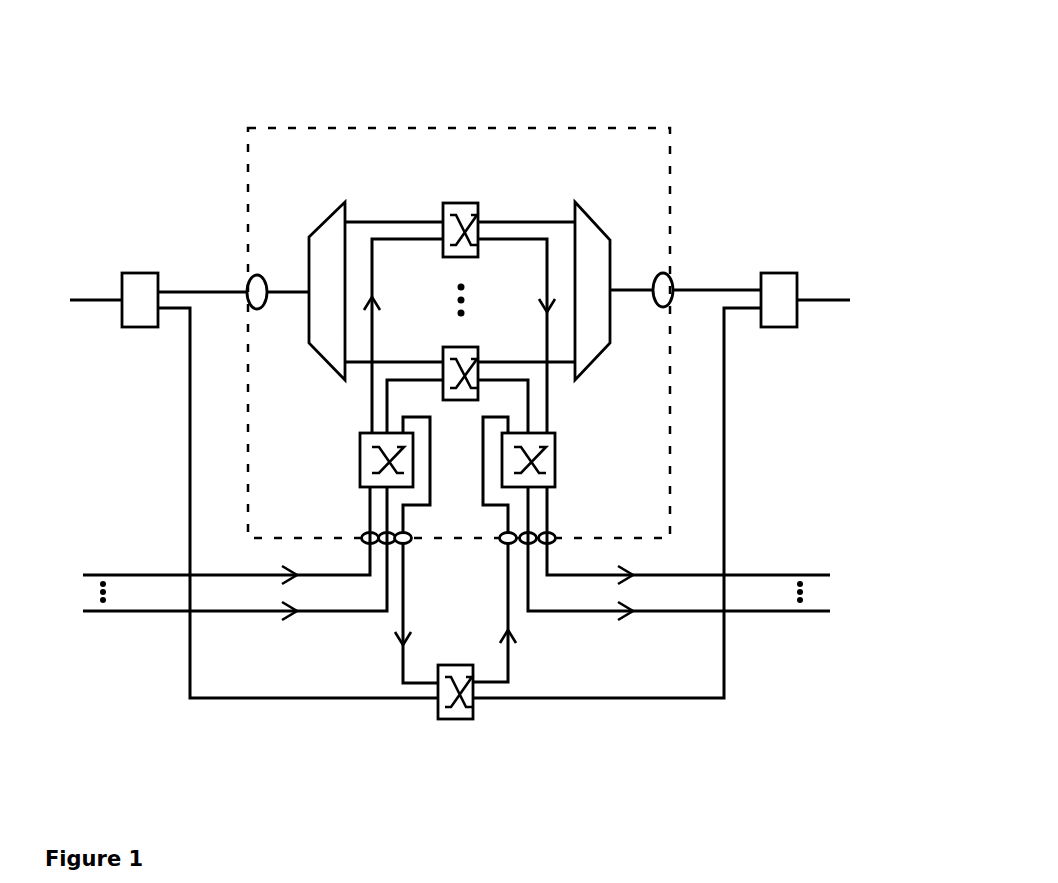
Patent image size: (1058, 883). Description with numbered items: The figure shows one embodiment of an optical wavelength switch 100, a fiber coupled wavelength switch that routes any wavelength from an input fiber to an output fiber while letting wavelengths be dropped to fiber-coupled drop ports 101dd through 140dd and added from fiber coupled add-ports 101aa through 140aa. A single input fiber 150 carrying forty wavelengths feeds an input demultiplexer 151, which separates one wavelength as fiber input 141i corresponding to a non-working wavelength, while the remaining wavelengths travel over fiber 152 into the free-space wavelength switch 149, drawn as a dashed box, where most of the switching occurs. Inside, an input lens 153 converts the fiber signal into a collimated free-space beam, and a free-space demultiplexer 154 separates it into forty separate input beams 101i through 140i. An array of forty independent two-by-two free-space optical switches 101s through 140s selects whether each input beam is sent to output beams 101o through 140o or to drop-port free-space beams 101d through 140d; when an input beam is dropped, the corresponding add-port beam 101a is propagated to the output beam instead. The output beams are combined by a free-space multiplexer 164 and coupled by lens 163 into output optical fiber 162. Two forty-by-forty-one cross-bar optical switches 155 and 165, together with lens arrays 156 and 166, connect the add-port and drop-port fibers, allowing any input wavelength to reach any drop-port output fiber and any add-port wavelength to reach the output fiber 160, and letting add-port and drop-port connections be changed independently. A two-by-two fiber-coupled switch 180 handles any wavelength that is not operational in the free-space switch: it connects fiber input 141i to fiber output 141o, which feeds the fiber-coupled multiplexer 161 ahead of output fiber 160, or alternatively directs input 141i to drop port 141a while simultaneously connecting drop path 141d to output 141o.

The switch 100 is at (627, 92).
The free-space wavelength switch 149 is at (250, 127).
The input fiber 150 is at (85, 293).
The input demultiplexer 151 is at (124, 330).
The fiber 152 is at (200, 286).
The input lens 153 is at (262, 312).
The free-space demultiplexer 154 is at (328, 212).
The cross-bar optical switch 155 is at (357, 462).
The lens array 156 is at (357, 533).
The output fiber 160 is at (835, 292).
The fiber-coupled multiplexer 161 is at (795, 330).
The output optical fiber 162 is at (718, 286).
The lens 163 is at (660, 312).
The free-space multiplexer 164 is at (593, 212).
The cross-bar optical switch 165 is at (557, 461).
The lens array 166 is at (562, 533).
The input beam 101i is at (403, 213).
The 2×2 free-space optical switch 101s is at (461, 197).
The output beam 101o is at (519, 213).
The add-port beam 101a is at (407, 245).
The drop-port free-space beam 101d is at (515, 245).
The input beam 140i is at (350, 367).
The 2×2 free-space optical switch 140s is at (452, 344).
The output beam 140o is at (574, 368).
The drop-port free-space beam 140d is at (518, 356).
The add-port input fiber 101aa is at (104, 568).
The add-port 140aa is at (101, 620).
The drop-port output fiber 101dd is at (808, 568).
The drop-port 140dd is at (808, 620).
The drop path 141d is at (392, 672).
The drop port 141a is at (513, 675).
The fiber input 141i is at (208, 708).
The fiber output 141o is at (702, 706).
The 2×2 fiber-coupled switch 180 is at (448, 724).